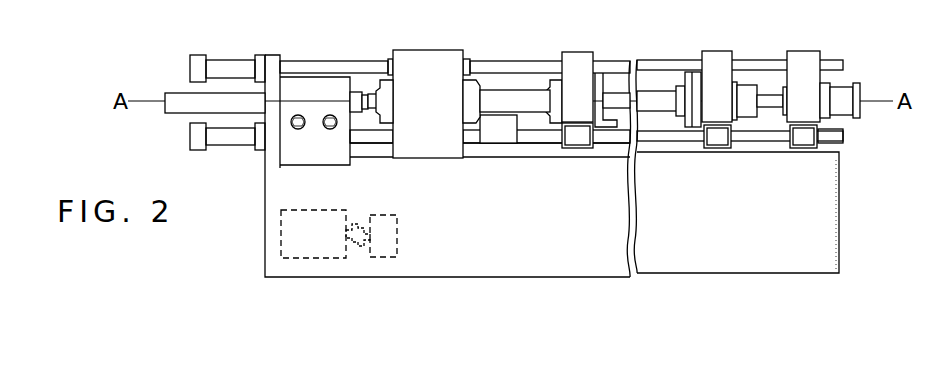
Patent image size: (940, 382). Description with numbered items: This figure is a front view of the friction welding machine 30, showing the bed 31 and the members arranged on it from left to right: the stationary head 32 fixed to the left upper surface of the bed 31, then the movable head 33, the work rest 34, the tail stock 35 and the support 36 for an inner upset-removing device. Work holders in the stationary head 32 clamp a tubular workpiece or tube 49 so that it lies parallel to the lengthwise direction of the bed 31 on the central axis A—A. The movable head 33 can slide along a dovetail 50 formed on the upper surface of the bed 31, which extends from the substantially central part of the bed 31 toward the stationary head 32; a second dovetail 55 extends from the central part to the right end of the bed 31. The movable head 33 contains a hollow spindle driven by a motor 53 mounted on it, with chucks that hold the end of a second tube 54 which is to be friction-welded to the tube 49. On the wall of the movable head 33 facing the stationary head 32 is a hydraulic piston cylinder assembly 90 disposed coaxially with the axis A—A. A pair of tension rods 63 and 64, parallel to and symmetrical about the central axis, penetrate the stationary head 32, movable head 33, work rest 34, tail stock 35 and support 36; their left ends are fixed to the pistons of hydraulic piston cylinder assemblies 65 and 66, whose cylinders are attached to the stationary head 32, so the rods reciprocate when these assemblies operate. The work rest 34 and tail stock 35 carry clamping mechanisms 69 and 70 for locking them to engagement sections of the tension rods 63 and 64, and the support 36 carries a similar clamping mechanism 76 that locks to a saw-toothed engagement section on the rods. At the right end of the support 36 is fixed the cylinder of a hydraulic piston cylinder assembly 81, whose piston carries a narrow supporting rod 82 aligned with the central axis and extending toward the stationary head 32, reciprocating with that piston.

The friction welding machine 30 is at (846, 208).
The bed 31 is at (832, 255).
The stationary head 32 is at (276, 159).
The movable head 33 is at (434, 65).
The work rest 34 is at (583, 63).
The tail stock 35 is at (718, 58).
The support for inner upset-removing device 36 is at (807, 58).
The tube 49 is at (178, 95).
The dovetail 50 is at (386, 150).
The motor 53 is at (497, 125).
The tube 54 is at (515, 95).
The dovetail 55 is at (838, 142).
The tension rod 63 is at (320, 67).
The tension rod 64 is at (374, 140).
The hydraulic piston cylinder assembly 65 is at (233, 66).
The hydraulic piston cylinder assembly 66 is at (234, 140).
The clamping mechanism 69 is at (577, 140).
The clamping mechanism 70 is at (720, 138).
The clamping mechanism 76 is at (803, 140).
The hydraulic piston cylinder assembly 81 is at (843, 92).
The supporting rod 82 is at (358, 90).
The hydraulic piston cylinder assembly 90 is at (470, 105).